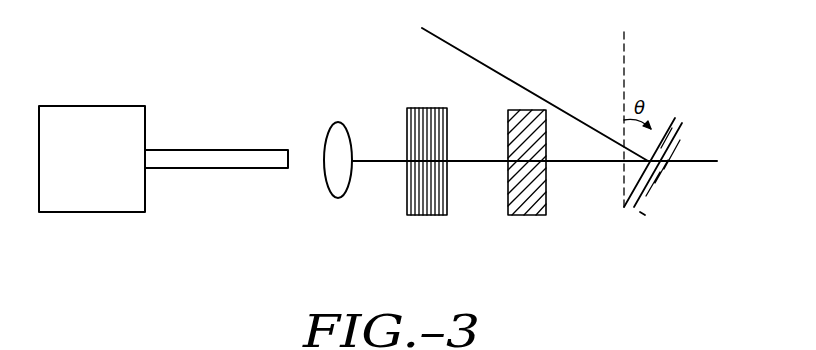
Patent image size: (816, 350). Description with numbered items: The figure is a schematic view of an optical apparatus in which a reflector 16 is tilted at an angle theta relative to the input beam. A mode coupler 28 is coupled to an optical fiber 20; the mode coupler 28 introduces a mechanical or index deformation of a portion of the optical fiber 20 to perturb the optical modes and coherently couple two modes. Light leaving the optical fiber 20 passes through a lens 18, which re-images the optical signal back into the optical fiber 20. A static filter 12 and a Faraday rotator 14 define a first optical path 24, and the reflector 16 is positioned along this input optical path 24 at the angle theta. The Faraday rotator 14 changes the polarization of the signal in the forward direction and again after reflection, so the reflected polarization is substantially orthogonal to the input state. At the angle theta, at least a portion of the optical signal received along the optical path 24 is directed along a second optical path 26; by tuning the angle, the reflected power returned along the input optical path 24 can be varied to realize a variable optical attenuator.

The mode coupler 28 is at (102, 113).
The optical fiber 20 is at (190, 153).
The lens 18 is at (335, 140).
The first optical path 24 is at (377, 163).
The static filter 12 is at (447, 130).
The Faraday rotator 14 is at (546, 173).
The second optical path 26 is at (463, 51).
The reflector 16 is at (687, 137).